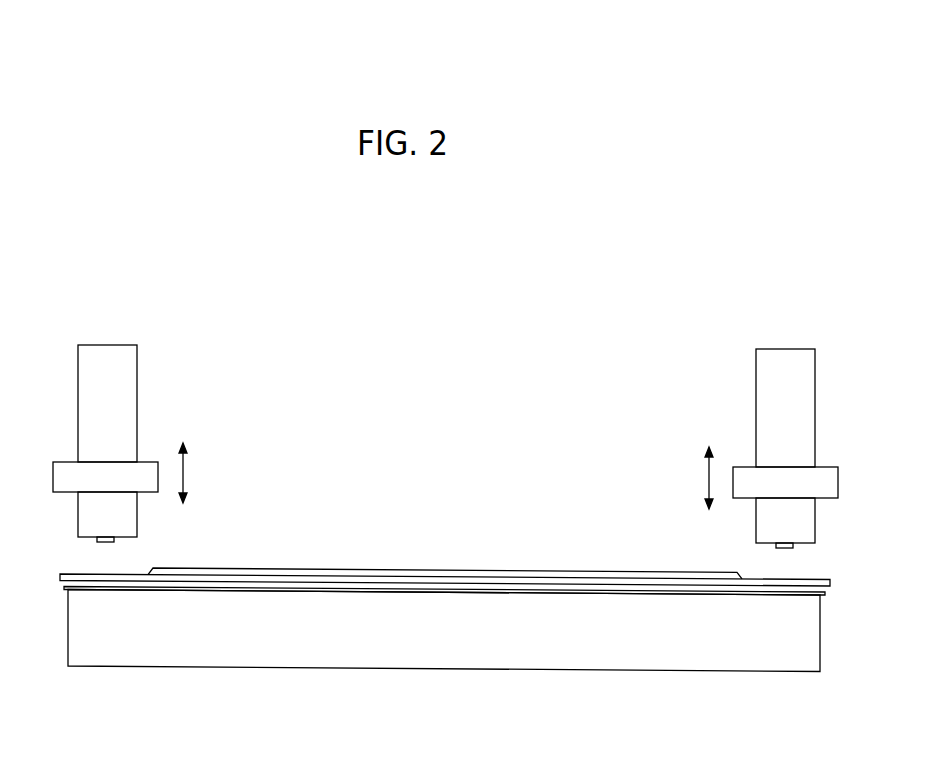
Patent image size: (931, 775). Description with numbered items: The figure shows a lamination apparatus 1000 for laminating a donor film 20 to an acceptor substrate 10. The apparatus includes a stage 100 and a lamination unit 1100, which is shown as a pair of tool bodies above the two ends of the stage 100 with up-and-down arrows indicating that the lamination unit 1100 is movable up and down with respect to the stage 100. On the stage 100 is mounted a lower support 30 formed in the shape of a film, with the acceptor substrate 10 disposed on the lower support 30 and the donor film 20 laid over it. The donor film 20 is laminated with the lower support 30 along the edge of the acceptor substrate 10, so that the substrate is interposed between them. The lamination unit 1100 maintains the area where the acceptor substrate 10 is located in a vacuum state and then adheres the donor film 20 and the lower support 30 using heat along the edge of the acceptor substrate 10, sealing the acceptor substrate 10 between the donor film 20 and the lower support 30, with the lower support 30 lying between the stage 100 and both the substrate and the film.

The lamination apparatus 1000 is at (471, 293).
The lamination unit 1100 is at (137, 397).
The stage 100 is at (260, 608).
The acceptor substrate 10 is at (338, 582).
The lower support 30 is at (412, 587).
The donor film 20 is at (502, 573).